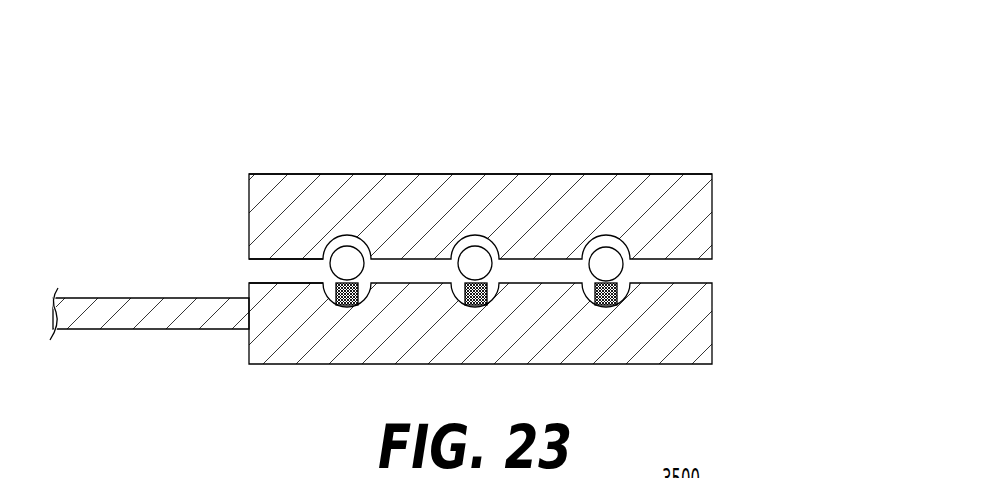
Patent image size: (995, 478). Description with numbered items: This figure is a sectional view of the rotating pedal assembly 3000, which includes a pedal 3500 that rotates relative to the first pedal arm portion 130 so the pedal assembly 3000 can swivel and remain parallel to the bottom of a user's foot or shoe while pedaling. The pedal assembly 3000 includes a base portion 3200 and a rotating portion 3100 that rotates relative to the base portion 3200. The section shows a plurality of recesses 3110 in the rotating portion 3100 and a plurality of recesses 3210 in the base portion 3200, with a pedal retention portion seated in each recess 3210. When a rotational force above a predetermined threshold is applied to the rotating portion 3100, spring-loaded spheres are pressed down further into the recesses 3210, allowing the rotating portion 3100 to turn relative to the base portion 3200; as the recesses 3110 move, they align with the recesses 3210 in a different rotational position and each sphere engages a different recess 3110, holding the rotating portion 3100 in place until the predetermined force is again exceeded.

The first pedal arm portion 130 is at (88, 312).
The rotating pedal assembly 3000 is at (788, 201).
The rotating portion 3100 is at (713, 190).
The recesses 3110 is at (322, 250).
The base portion 3200 is at (698, 320).
The recesses 3210 is at (337, 307).
The pedal 3500 is at (588, 174).